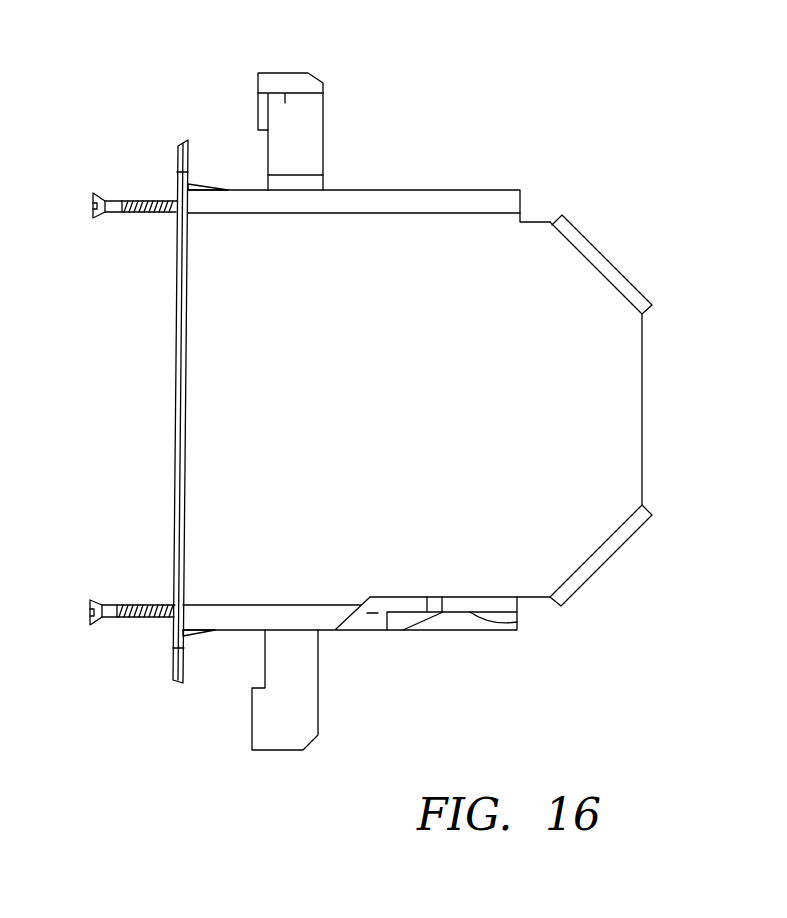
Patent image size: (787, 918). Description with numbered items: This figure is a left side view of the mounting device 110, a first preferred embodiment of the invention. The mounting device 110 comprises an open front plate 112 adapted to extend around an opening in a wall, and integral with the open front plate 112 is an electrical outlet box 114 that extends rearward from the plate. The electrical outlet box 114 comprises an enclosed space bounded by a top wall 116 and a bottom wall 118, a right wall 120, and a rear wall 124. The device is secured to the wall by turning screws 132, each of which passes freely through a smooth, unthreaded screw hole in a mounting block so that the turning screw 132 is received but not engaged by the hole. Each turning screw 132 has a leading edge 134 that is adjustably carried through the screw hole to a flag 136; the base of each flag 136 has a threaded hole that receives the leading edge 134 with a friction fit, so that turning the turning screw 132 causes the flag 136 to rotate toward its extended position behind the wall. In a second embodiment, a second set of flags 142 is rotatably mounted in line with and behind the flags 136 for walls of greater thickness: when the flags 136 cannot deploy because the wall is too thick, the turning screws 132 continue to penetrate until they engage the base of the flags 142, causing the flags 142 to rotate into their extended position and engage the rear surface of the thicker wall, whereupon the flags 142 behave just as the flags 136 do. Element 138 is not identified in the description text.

The mounting device 110 is at (643, 575).
The open front plate 112 is at (177, 427).
The electrical outlet box 114 is at (537, 240).
The top wall 116 is at (421, 213).
The bottom wall 118 is at (532, 600).
The right wall 120 is at (417, 413).
The rear wall 124 is at (628, 405).
The turning screw 132 is at (94, 221).
The leading edge 134 is at (177, 200).
The flag 136 is at (307, 127).
The clip tab 138 is at (258, 103).
The second set of flags 142 is at (377, 620).